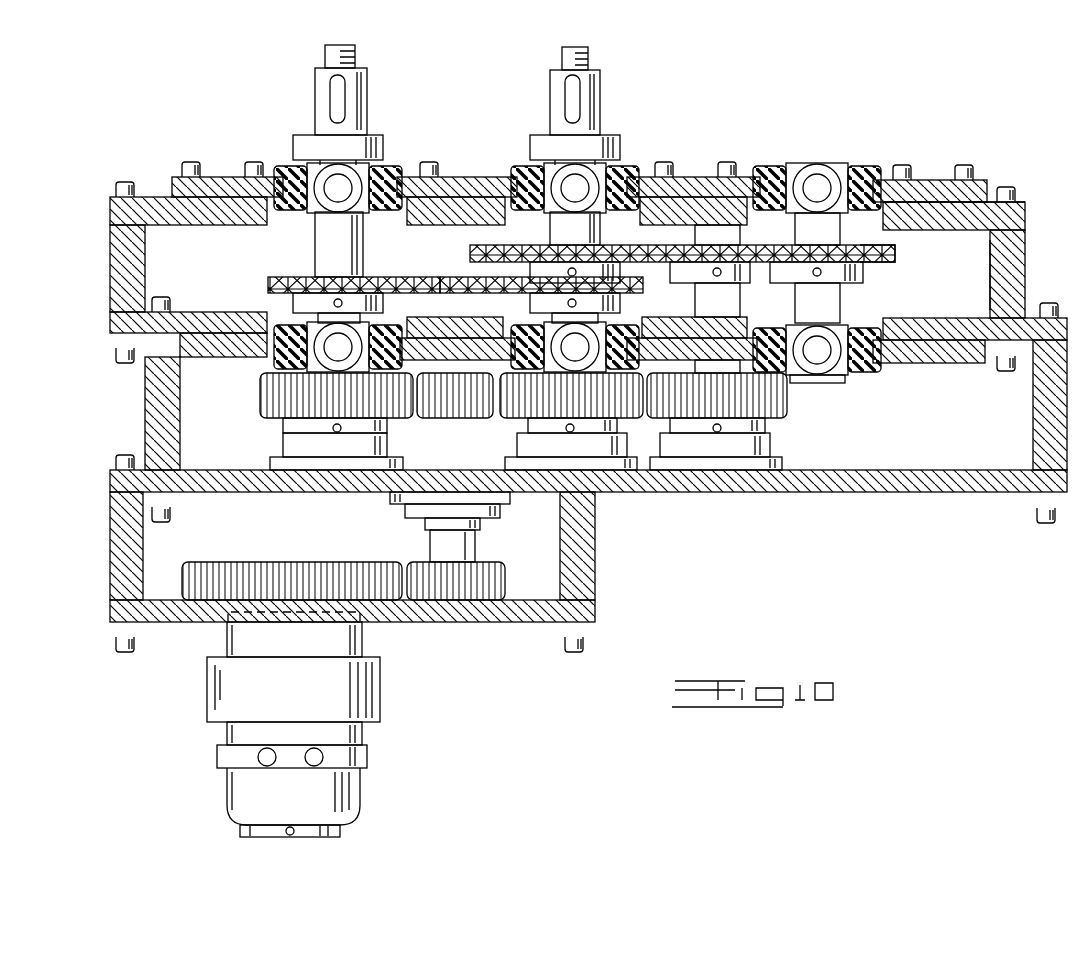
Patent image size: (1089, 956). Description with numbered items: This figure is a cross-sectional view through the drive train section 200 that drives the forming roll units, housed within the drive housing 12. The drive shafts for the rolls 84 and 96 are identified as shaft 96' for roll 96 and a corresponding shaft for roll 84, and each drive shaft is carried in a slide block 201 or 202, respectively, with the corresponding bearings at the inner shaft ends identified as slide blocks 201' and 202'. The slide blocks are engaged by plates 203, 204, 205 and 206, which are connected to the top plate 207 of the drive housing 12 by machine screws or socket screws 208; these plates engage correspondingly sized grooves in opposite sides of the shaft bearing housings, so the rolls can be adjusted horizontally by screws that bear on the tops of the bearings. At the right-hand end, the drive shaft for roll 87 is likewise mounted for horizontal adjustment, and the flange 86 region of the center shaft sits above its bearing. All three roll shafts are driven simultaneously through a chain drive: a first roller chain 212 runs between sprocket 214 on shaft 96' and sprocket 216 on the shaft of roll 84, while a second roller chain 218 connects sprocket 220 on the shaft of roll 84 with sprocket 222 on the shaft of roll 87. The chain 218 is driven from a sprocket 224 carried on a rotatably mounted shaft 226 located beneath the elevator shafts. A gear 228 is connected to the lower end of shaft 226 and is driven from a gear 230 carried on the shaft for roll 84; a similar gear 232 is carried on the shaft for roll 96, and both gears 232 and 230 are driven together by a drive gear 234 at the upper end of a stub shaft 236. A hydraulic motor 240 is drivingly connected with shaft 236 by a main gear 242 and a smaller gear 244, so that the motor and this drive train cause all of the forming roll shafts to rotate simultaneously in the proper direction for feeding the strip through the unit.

The gear train housing assembly 200 is at (110, 149).
The drive housing 12 is at (985, 127).
The roll 96 is at (384, 184).
The drive shaft 96' is at (366, 134).
The roll 84 is at (623, 106).
The shaft flange 86 is at (600, 117).
The roll 87 is at (838, 315).
The slide block 201 is at (594, 173).
The slide block 201' is at (593, 332).
The slide block 202 is at (362, 173).
The slide block 202' is at (302, 330).
The plate 203 is at (980, 180).
The plate 204 is at (758, 176).
The plate 205 is at (458, 177).
The plate 206 is at (271, 177).
The top plate 207 is at (932, 250).
The socket screws 208 is at (240, 177).
The first roller chain 212 is at (447, 275).
The sprocket 214 is at (376, 305).
The sprocket 216 is at (528, 305).
The second roller chain 218 is at (892, 260).
The sprocket 220 is at (526, 263).
The sprocket 222 is at (866, 290).
The sprocket 224 is at (742, 300).
The shaft 226 is at (790, 377).
The gear 228 is at (770, 432).
The gear 230 is at (530, 431).
The gear 232 is at (275, 435).
The drive gear 234 is at (440, 420).
The stub shaft 236 is at (430, 548).
The hydraulic motor 240 is at (380, 704).
The main gear 242 is at (283, 562).
The smaller gear 244 is at (485, 565).